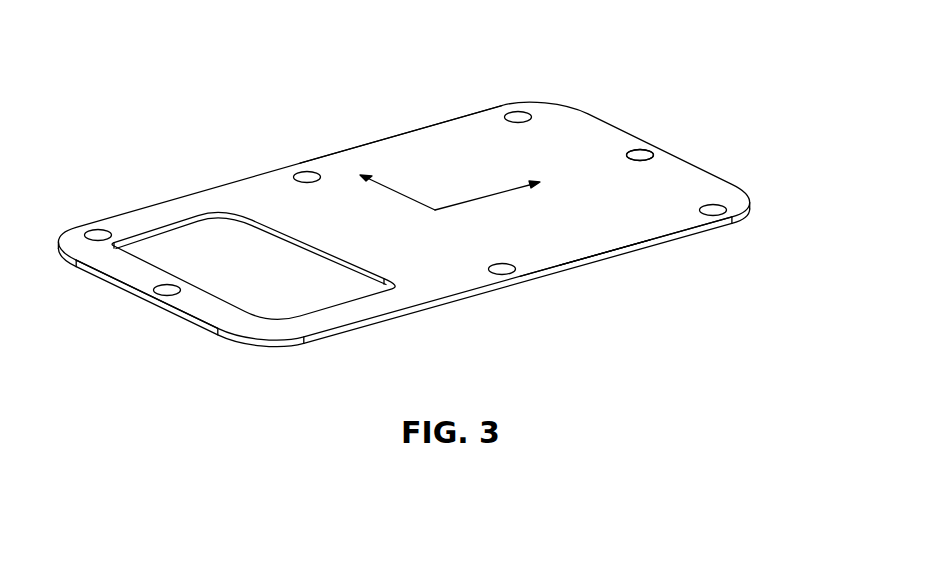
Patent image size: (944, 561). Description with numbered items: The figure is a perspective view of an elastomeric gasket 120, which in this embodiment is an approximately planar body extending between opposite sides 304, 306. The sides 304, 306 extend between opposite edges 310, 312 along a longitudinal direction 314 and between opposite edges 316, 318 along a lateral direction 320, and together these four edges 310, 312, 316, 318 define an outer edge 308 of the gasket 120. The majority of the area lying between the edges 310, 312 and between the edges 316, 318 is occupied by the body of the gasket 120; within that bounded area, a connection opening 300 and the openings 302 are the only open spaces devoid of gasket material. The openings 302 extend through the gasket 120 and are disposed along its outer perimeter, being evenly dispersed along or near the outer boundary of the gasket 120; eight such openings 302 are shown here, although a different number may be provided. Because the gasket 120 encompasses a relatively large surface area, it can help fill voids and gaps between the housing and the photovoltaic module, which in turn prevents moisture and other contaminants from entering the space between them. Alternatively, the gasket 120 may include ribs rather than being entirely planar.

The gasket 120 is at (590, 115).
The connection opening 300 is at (205, 250).
The openings 302 is at (503, 277).
The side 304 is at (707, 192).
The side 306 is at (698, 238).
The outer edge 308 is at (545, 103).
The edge 310 is at (133, 297).
The edge 312 is at (647, 142).
The longitudinal direction 314 is at (480, 197).
The edge 316 is at (448, 122).
The edge 318 is at (620, 256).
The lateral direction 320 is at (410, 198).